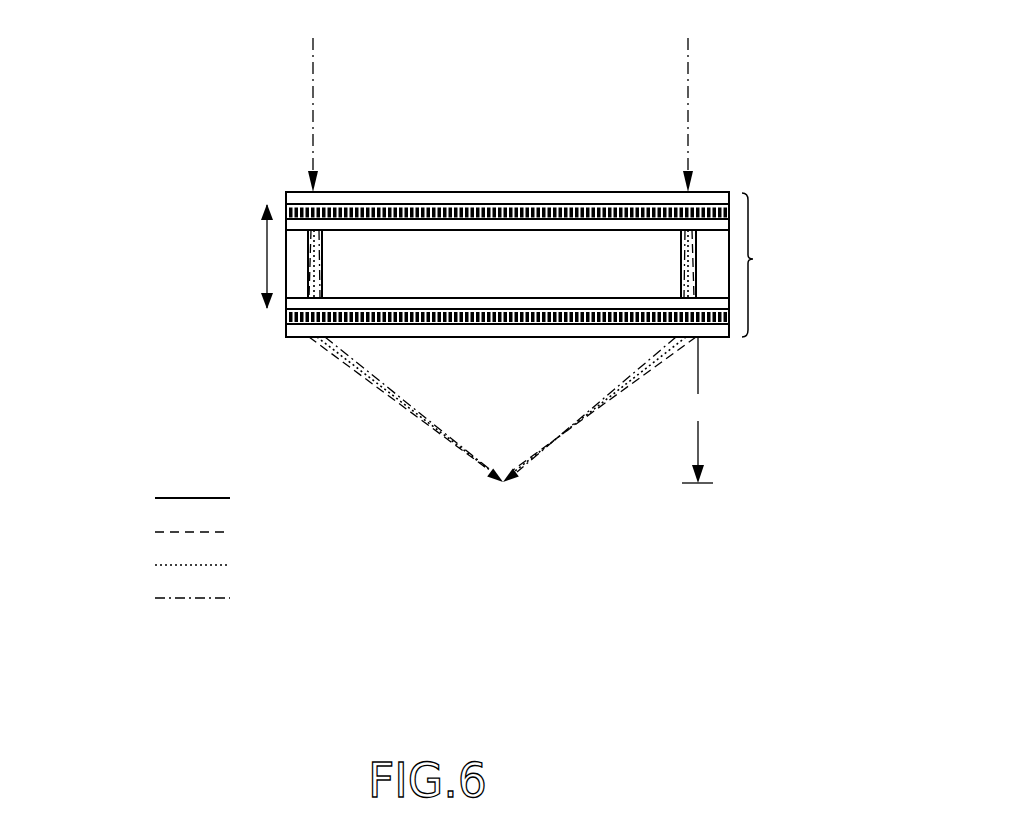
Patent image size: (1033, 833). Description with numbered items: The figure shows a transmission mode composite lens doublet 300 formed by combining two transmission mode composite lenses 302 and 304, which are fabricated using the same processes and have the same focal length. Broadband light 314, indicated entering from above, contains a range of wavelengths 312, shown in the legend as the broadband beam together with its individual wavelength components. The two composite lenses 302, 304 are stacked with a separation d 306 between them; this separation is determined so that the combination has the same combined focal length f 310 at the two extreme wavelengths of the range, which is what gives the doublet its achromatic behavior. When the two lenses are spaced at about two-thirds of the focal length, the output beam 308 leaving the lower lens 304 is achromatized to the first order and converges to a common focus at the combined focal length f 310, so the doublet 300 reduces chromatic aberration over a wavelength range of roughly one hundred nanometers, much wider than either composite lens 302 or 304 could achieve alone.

The achromatic doublet 300 is at (541, 264).
The transmission mode composite lens 302 is at (728, 190).
The transmission mode composite lens 304 is at (285, 336).
The separation d 306 is at (240, 218).
The output beam 308 is at (583, 418).
The combined focal length f 310 is at (699, 371).
The range of wavelengths 312 is at (128, 568).
The broadband light 314 is at (692, 65).